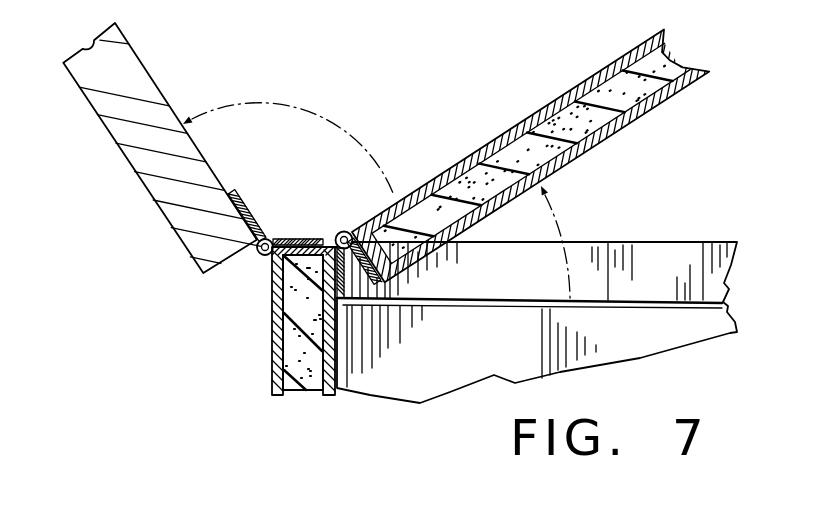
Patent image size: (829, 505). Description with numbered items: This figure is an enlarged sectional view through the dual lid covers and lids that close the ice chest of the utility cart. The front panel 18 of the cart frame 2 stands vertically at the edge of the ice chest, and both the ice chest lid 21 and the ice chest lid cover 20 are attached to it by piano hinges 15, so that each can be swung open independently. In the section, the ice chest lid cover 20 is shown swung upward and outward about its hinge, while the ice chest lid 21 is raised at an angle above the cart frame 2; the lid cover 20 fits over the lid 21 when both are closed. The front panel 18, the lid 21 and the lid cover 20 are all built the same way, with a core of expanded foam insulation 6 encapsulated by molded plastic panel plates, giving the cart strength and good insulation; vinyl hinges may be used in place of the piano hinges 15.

The cart frame 2 is at (620, 240).
The expanded foam insulation 6 is at (548, 127).
The piano hinges 15 is at (344, 232).
The front panel 18 is at (272, 323).
The ice chest lid cover 20 is at (158, 76).
The ice chest lid 21 is at (636, 128).